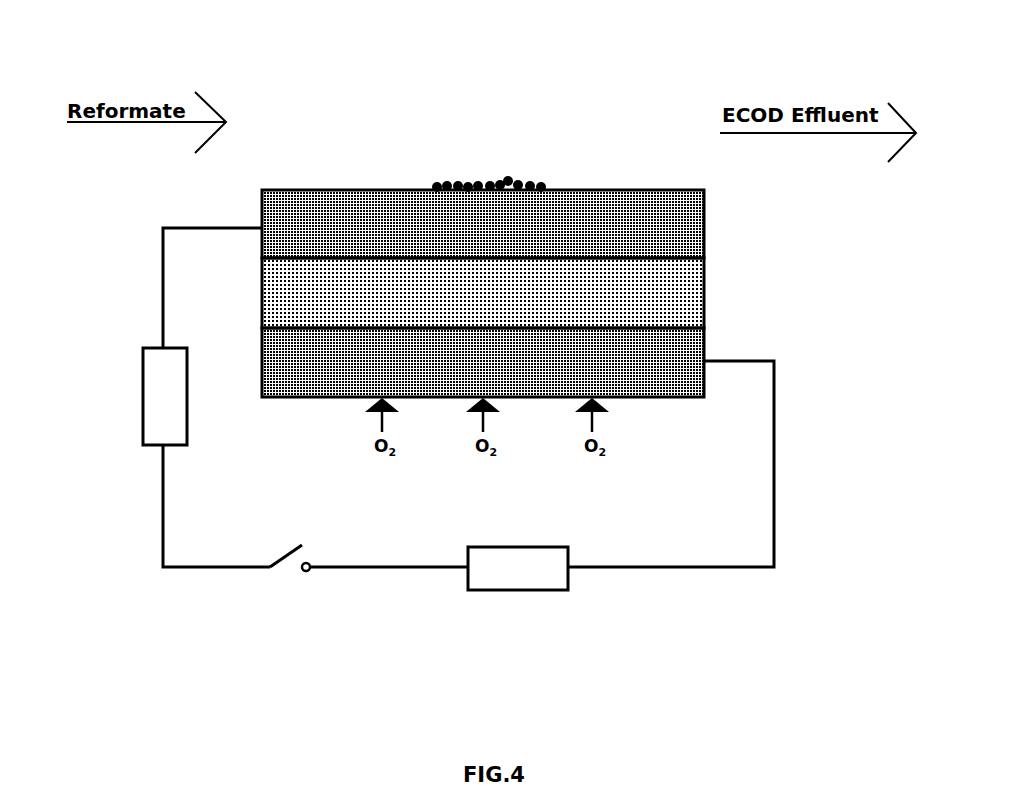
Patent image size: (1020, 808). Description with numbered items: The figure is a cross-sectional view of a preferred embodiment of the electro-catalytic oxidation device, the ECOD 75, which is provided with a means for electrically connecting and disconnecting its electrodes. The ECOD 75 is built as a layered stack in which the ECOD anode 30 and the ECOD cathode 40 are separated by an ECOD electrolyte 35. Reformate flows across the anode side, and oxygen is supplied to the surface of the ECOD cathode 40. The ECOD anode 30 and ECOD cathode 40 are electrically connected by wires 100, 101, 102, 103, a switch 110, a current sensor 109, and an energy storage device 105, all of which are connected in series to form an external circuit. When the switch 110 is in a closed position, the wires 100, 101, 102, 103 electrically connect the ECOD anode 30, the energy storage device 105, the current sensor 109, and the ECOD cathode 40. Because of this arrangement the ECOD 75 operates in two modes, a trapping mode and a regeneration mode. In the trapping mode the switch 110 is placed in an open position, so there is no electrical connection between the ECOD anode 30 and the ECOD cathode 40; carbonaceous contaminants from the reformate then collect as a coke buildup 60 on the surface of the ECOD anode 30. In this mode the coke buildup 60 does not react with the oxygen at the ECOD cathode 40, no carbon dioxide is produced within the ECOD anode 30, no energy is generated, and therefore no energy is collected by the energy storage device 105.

The ECOD anode 30 is at (706, 222).
The ECOD electrolyte 35 is at (706, 290).
The ECOD cathode 40 is at (706, 348).
The coke buildup 60 is at (517, 180).
The ECOD 75 is at (485, 55).
The wire 100 is at (158, 290).
The wire 101 is at (160, 567).
The wire 102 is at (357, 567).
The wire 103 is at (648, 567).
The energy storage device 105 is at (518, 568).
The current sensor 109 is at (165, 396).
The switch 110 is at (285, 558).